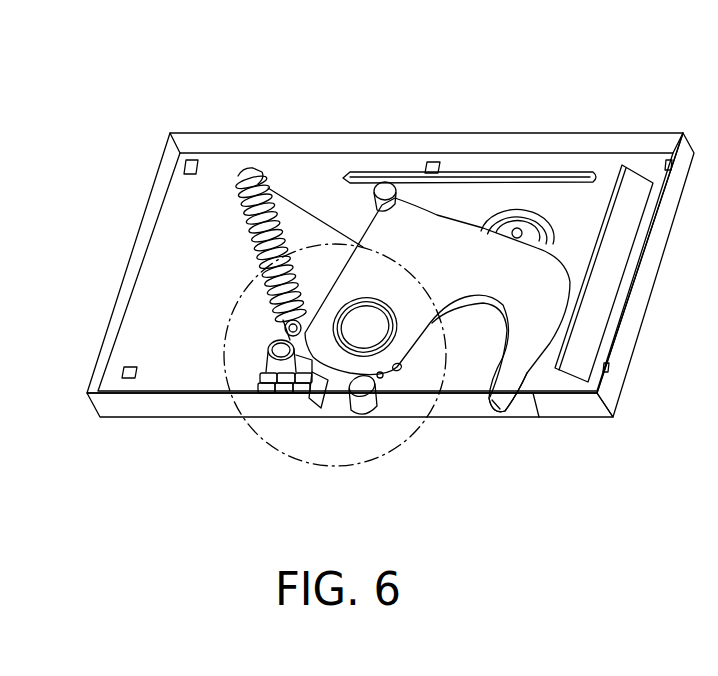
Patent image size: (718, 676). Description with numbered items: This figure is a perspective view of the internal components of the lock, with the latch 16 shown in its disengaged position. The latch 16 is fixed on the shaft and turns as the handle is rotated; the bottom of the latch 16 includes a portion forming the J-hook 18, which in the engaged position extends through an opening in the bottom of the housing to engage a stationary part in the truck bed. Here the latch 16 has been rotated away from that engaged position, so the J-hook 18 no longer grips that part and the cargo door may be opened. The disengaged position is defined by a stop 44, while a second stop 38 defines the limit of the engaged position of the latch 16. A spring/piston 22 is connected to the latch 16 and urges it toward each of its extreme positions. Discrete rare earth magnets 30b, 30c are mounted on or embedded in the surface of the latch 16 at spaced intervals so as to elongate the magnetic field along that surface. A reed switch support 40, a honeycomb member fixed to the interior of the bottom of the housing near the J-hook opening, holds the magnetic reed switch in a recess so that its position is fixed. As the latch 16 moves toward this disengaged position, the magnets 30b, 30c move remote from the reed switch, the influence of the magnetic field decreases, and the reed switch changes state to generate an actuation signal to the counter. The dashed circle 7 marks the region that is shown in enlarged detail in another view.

The detail region shown in FIG. 7 is at (263, 447).
The latch 16 is at (450, 237).
The J-hook 18 is at (503, 383).
The spring/piston 22 is at (275, 212).
The magnet 30b is at (383, 378).
The magnet 30c is at (401, 370).
The stop 38 is at (365, 402).
The reed switch support 40 is at (262, 377).
The stop 44 is at (385, 186).